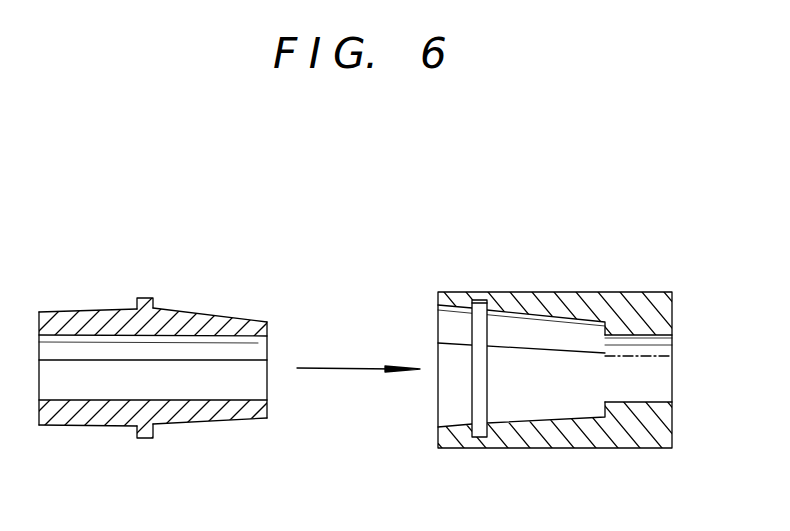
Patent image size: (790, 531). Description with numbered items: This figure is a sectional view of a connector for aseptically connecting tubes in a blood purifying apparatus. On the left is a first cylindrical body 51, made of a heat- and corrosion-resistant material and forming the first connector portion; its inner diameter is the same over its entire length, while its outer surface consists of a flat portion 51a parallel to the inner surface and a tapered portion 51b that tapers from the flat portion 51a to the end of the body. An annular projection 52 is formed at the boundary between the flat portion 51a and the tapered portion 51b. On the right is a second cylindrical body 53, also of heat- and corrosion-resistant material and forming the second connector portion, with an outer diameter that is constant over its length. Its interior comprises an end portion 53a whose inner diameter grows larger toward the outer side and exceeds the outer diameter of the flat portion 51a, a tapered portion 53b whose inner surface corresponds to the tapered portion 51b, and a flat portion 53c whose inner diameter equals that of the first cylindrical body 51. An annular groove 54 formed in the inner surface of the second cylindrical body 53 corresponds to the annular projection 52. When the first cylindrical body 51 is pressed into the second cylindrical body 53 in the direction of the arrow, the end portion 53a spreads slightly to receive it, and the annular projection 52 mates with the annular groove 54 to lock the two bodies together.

The first cylindrical body 51 is at (255, 371).
The flat portion 51a is at (110, 310).
The tapered portion 51b is at (233, 318).
The annular projection 52 is at (148, 298).
The second cylindrical body 53 is at (535, 360).
The end portion 53a is at (455, 307).
The tapered portion 53b is at (565, 324).
The flat portion 53c is at (653, 335).
The annular groove 54 is at (488, 304).